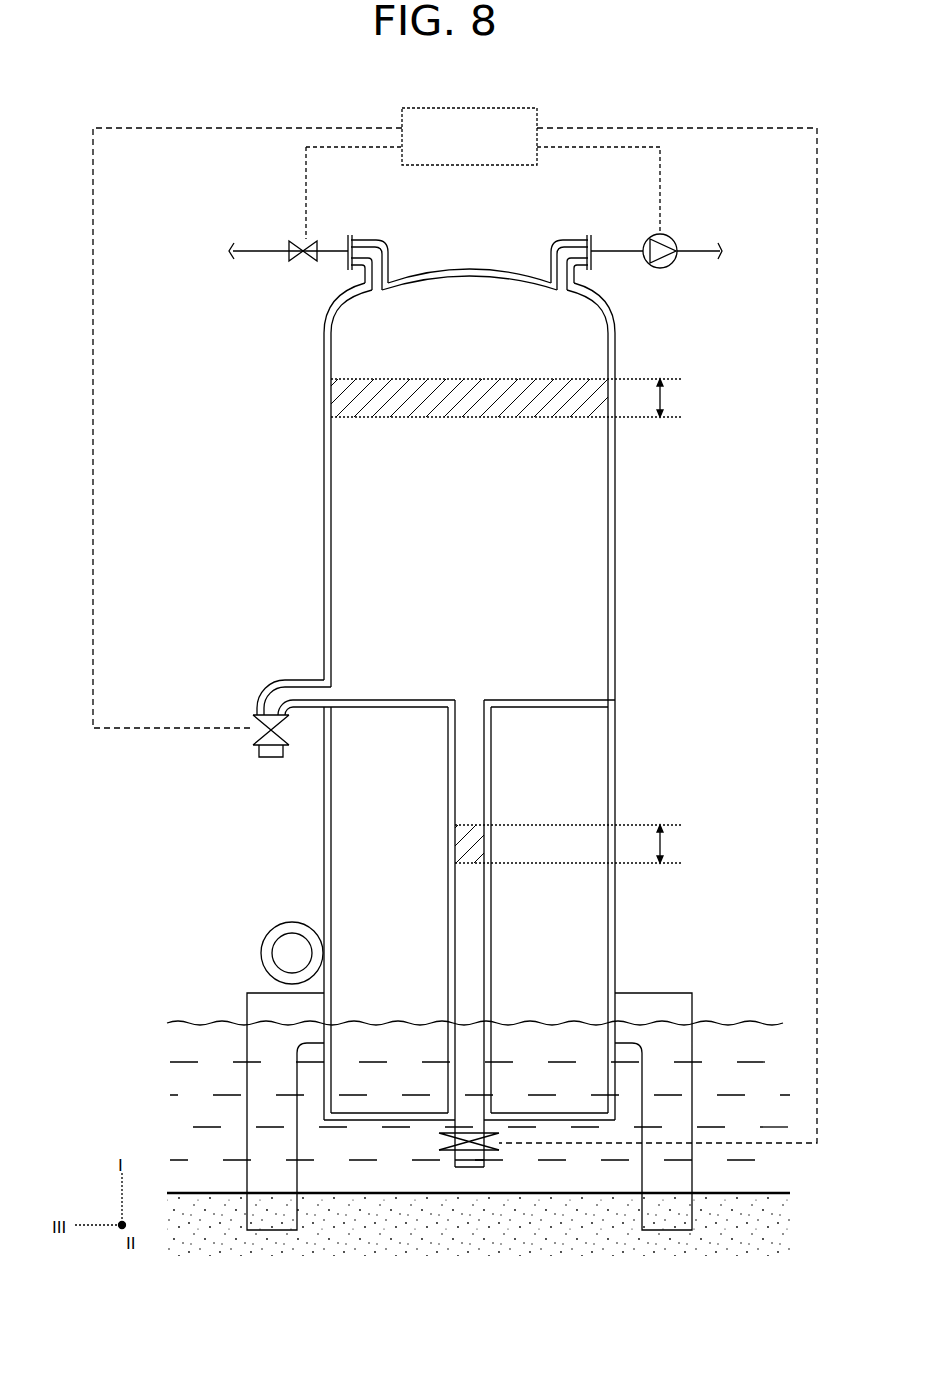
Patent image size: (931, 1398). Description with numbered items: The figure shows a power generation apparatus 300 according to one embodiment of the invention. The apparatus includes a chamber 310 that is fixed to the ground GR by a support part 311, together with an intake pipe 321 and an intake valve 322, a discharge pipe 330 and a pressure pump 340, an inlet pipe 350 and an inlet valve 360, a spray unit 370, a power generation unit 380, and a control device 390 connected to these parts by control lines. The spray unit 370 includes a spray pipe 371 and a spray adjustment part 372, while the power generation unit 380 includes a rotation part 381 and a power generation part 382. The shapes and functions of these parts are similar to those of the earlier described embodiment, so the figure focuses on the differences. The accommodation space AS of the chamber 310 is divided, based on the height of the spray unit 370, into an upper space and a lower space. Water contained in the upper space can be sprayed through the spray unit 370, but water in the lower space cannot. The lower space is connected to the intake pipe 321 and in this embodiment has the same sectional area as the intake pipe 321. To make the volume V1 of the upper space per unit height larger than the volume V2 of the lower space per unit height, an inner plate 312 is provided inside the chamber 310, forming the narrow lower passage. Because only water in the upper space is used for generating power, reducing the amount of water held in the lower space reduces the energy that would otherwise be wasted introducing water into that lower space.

The power generation apparatus 300 is at (487, 88).
The control device 390 is at (540, 118).
The chamber 310 is at (322, 521).
The support part 311 is at (660, 995).
The inner plate 312 is at (448, 806).
The intake pipe 321 is at (441, 1166).
The intake valve 322 is at (441, 1142).
The discharge pipe 330 is at (572, 238).
The pressure pump 340 is at (673, 236).
The inlet pipe 350 is at (362, 238).
The inlet valve 360 is at (300, 241).
The spray unit 370 is at (218, 686).
The spray pipe 371 is at (286, 681).
The spray adjustment part 372 is at (258, 716).
The power generation unit 380 is at (222, 941).
The rotation part 381 is at (278, 927).
The power generation part 382 is at (273, 963).
The volume of the upper space per unit height V1 is at (571, 386).
The volume of the lower space per unit height V2 is at (492, 826).
The accommodation space AS is at (727, 476).
The ground GR is at (725, 1193).